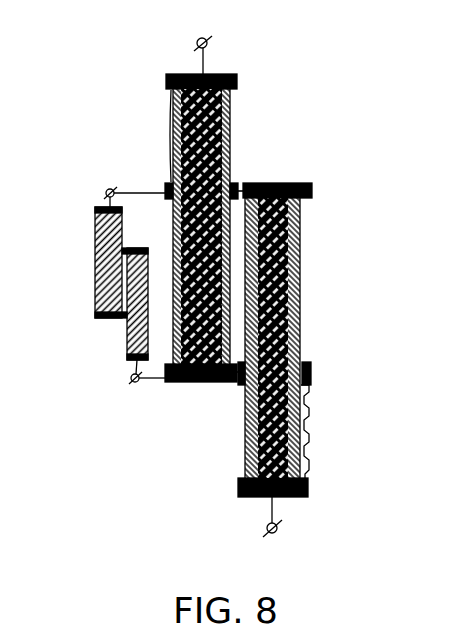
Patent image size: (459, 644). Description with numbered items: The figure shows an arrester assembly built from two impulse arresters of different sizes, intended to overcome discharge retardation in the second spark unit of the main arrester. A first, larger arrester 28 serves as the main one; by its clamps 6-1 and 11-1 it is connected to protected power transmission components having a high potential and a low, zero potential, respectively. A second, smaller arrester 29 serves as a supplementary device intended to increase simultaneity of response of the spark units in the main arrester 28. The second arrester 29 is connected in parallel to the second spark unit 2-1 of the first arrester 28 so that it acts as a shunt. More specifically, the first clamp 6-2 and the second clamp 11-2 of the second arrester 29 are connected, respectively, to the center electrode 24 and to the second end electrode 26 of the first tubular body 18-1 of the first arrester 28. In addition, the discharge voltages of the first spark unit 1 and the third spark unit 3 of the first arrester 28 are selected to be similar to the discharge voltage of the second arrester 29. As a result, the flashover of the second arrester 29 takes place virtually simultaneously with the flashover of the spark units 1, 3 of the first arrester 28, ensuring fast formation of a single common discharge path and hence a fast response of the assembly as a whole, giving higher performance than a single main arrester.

The first spark unit 1 is at (150, 121).
The first clamp 6-1 is at (197, 43).
The first clamp of the second arrester 6-2 is at (106, 192).
The first tubular body 18-1 is at (228, 152).
The center electrode 24 is at (165, 186).
The second end electrode 26 is at (205, 383).
The second spark unit 2-1 is at (311, 243).
The first arrester 28 is at (319, 328).
The third spark unit 3 is at (317, 456).
The second clamp 11-1 is at (266, 529).
The second clamp of the second arrester 11-2 is at (131, 381).
The second arrester 29 is at (69, 262).